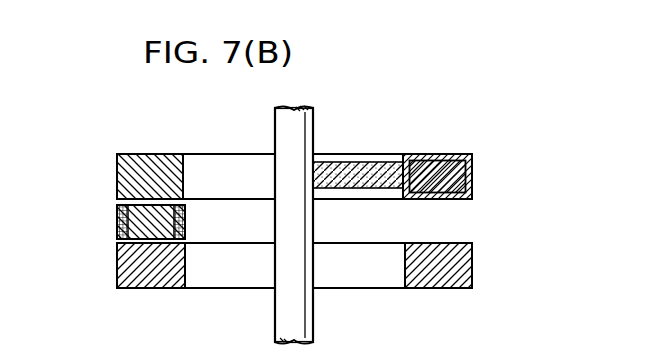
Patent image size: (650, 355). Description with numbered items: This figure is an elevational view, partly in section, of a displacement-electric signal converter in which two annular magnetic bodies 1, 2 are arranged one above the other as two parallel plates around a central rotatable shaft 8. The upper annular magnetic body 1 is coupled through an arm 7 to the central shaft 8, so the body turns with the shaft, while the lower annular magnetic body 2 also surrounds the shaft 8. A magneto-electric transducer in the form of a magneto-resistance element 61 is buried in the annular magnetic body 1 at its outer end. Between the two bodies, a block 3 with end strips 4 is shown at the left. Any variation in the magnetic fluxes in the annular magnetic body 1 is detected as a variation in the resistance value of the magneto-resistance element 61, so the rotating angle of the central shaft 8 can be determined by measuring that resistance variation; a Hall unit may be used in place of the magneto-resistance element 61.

The annular magnetic body 1 is at (474, 170).
The annular magnetic body 2 is at (474, 264).
The spacer block 3 is at (147, 221).
The end strips of spacer 4 is at (117, 216).
The arm 7 is at (357, 164).
The magneto-resistance element 61 is at (447, 166).
The central rotatable shaft 8 is at (314, 321).